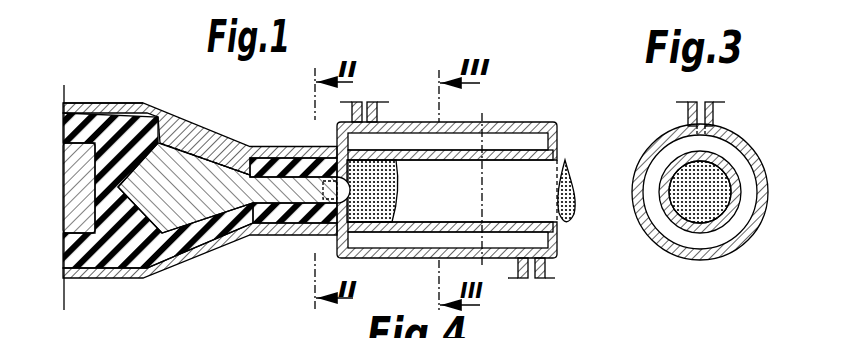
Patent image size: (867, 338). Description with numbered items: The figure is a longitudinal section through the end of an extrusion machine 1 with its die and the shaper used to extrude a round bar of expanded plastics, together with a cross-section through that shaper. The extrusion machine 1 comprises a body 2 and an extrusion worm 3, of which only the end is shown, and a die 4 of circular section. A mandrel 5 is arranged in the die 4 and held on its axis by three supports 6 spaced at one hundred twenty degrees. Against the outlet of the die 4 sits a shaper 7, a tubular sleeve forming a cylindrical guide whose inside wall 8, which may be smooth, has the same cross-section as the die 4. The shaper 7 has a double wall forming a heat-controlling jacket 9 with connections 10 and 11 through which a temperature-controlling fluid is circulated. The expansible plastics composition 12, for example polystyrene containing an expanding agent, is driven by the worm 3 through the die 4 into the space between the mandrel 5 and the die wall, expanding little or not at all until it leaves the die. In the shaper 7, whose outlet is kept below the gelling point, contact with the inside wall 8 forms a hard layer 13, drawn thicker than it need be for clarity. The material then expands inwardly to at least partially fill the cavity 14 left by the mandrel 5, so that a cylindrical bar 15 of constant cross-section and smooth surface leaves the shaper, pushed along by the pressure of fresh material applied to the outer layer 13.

In FIG. 1, the extrusion machine 1 is at (113, 99).
In FIG. 1, the body 2 is at (75, 102).
In FIG. 1, the extrusion worm 3 is at (80, 233).
In FIG. 1, the die 4 is at (270, 154).
In FIG. 1, the mandrel 5 is at (272, 206).
In FIG. 1, the supports 6 is at (185, 137).
In FIG. 1, the shaper 7 is at (403, 123).
In FIG. 3, the shaper 7 is at (748, 153).
In FIG. 1, the inside wall 8 is at (508, 160).
In FIG. 3, the inside wall 8 is at (688, 227).
In FIG. 1, the heat-controlling jacket 9 is at (492, 137).
In FIG. 3, the heat-controlling jacket 9 is at (662, 163).
In FIG. 1, the connection 10 is at (530, 277).
In FIG. 1, the connection 11 is at (367, 103).
In FIG. 3, the connection 11 is at (710, 120).
In FIG. 1, the expansible plastics composition 12 is at (147, 263).
In FIG. 1, the hard layer 13 is at (374, 226).
In FIG. 3, the hard layer 13 is at (717, 223).
In FIG. 1, the cavity 14 is at (338, 191).
In FIG. 1, the cylindrical bar 15 is at (551, 216).